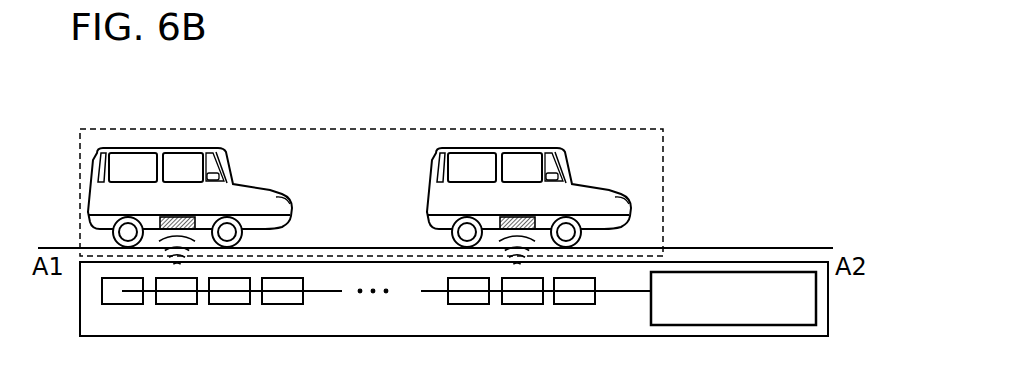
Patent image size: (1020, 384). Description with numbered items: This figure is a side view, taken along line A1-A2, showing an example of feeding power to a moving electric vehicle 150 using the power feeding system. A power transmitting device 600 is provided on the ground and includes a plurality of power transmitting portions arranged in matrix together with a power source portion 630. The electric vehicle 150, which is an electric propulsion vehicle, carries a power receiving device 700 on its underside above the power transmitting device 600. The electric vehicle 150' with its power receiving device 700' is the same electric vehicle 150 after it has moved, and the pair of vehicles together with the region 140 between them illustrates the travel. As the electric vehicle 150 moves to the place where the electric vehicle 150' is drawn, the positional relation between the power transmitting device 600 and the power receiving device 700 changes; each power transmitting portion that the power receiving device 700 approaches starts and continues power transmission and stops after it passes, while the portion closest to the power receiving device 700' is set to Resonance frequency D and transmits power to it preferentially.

The electric vehicle 150 is at (186, 166).
The power receiving device 700 is at (213, 173).
The electric vehicle 150' is at (529, 166).
The power receiving device 700' is at (566, 175).
The vehicle group / road region 140 is at (664, 181).
The power transmitting device 600 is at (625, 323).
The power source portion 630 is at (733, 298).